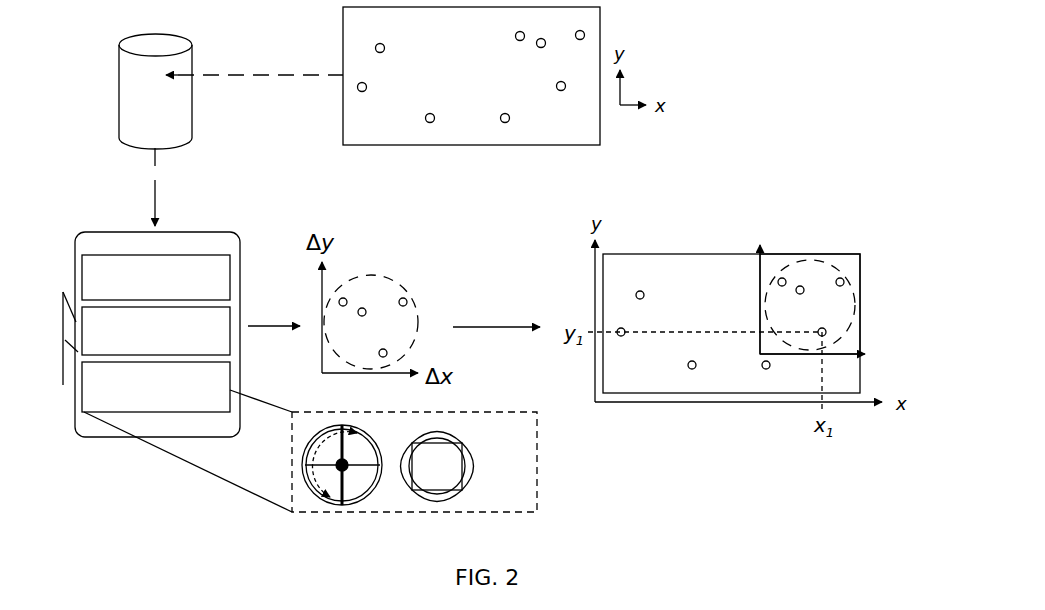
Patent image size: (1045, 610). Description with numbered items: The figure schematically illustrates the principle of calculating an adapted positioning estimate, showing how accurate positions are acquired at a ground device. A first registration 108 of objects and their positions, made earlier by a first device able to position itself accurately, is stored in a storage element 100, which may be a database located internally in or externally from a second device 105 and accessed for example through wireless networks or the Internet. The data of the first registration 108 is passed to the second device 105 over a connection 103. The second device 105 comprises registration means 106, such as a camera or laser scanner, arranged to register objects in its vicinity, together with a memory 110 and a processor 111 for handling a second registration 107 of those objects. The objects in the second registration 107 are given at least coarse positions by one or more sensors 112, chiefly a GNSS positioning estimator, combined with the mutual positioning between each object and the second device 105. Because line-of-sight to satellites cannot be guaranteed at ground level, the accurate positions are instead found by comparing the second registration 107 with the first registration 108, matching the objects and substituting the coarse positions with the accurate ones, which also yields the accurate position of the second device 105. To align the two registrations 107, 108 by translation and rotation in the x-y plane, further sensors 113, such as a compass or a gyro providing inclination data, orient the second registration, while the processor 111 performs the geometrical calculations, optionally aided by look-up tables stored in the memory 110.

The storage element 100 is at (180, 98).
The image data connection 103 is at (155, 197).
The second device 105 is at (197, 246).
The registration means 106 is at (63, 385).
The second registration 107 is at (392, 294).
The first registration 108 is at (457, 105).
The memory 110 is at (200, 273).
The processor 111 is at (208, 325).
The sensors 112 is at (200, 384).
The further sensors 113 is at (292, 508).